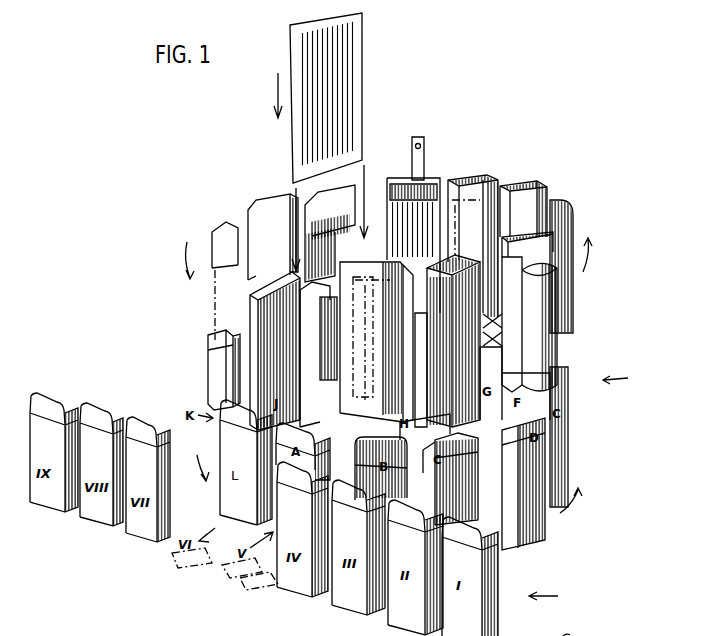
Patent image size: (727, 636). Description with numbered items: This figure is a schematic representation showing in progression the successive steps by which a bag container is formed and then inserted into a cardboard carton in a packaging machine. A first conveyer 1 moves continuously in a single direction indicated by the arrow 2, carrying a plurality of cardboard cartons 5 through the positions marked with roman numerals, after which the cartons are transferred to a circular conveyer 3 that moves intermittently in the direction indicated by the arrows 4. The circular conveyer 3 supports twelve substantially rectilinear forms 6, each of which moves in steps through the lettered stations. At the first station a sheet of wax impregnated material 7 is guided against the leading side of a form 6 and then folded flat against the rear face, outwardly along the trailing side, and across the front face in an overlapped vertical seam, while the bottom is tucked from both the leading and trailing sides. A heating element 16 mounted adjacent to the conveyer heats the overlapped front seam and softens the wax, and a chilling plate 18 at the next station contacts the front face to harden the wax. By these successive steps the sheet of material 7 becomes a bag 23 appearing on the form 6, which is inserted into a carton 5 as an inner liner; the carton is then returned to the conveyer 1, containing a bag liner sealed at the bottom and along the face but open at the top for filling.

The first conveyer 1 is at (549, 598).
The arrow 2 is at (570, 633).
The circular conveyer 3 is at (622, 377).
The arrows 4 is at (563, 530).
The cardboard cartons 5 is at (530, 553).
The form 6 is at (403, 262).
The sheet of wax impregnated material 7 is at (366, 80).
The heating element 16 is at (550, 352).
The chilling plate 18 is at (336, 330).
The bag 23 is at (520, 187).